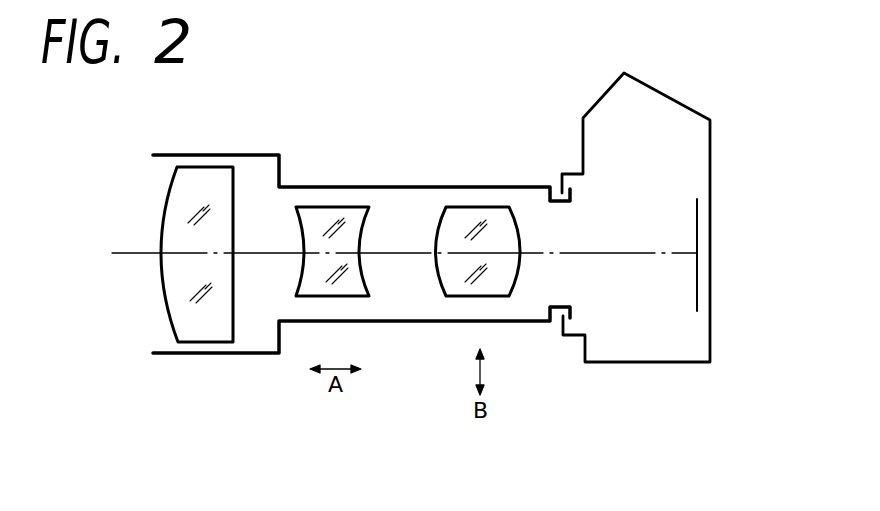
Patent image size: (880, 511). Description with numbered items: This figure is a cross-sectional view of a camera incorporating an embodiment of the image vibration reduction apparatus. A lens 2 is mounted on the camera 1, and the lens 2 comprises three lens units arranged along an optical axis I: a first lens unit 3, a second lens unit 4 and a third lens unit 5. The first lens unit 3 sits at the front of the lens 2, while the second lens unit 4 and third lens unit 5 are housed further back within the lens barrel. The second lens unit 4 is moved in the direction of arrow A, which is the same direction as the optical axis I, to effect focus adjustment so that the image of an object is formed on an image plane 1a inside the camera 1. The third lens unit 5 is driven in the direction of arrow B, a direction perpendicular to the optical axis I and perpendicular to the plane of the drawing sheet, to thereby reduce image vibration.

The camera 1 is at (678, 85).
The image plane 1a is at (691, 275).
The lens 2 is at (373, 159).
The first lens unit 3 is at (194, 326).
The second lens unit 4 is at (310, 281).
The third lens unit 5 is at (483, 281).
The optical axis I is at (123, 245).